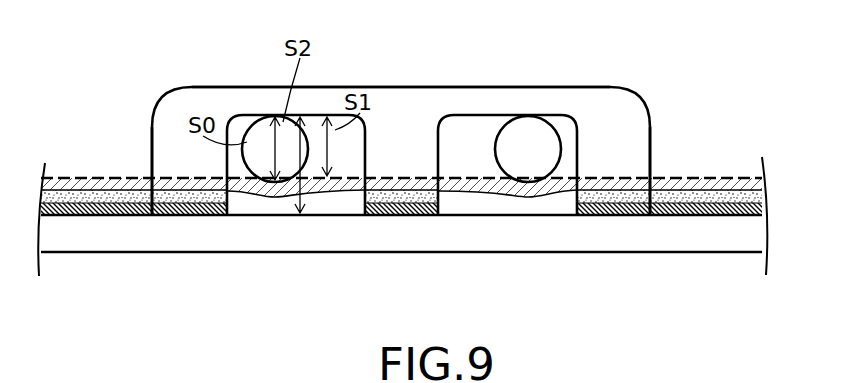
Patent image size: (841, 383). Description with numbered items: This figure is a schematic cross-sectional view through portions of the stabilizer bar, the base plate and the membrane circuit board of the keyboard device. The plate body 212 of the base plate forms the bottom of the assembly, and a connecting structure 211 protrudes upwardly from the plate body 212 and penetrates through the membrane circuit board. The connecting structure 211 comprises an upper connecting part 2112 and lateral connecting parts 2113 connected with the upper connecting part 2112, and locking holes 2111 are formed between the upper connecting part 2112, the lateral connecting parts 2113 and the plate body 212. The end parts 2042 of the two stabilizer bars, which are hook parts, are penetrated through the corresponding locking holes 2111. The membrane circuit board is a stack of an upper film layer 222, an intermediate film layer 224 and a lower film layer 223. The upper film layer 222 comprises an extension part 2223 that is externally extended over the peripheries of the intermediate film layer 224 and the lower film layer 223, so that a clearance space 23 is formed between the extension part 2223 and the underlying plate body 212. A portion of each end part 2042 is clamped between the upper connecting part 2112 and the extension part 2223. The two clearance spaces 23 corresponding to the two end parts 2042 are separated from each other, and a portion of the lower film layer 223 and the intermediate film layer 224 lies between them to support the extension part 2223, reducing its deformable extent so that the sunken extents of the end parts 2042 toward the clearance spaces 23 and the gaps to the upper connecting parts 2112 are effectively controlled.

The connecting structure 211 is at (590, 70).
The locking hole 2111 is at (577, 148).
The upper connecting part 2112 is at (467, 87).
The lateral connecting part 2113 is at (395, 150).
The end part 2042 is at (257, 133).
The upper film layer 222 is at (673, 184).
The intermediate film layer 224 is at (753, 197).
The lower film layer 223 is at (680, 212).
The extension part 2223 is at (203, 197).
The clearance space 23 is at (283, 210).
The plate body 212 is at (648, 238).